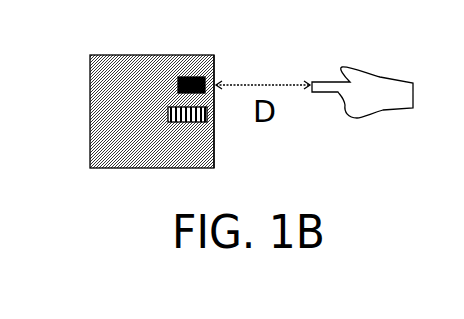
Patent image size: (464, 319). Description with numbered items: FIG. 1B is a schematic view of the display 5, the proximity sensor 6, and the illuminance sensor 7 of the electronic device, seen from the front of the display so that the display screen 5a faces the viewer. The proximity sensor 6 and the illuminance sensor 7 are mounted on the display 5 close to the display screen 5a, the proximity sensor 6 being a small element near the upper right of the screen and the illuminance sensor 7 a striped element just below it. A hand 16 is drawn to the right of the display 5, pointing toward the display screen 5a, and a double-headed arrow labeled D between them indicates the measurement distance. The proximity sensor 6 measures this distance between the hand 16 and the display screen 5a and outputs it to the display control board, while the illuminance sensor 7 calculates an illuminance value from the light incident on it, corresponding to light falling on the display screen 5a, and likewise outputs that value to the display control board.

The display 5 is at (131, 55).
The display screen 5a is at (216, 58).
The proximity sensor 6 is at (186, 76).
The illuminance sensor 7 is at (187, 124).
The hand 16 is at (382, 76).